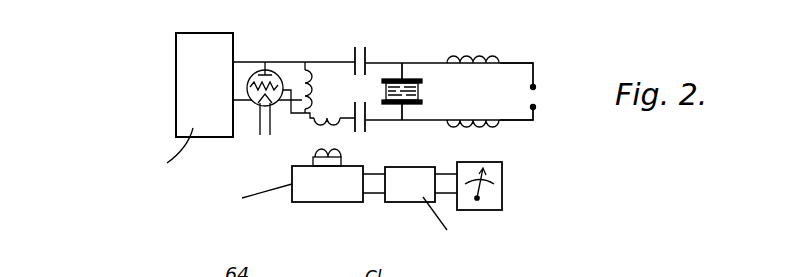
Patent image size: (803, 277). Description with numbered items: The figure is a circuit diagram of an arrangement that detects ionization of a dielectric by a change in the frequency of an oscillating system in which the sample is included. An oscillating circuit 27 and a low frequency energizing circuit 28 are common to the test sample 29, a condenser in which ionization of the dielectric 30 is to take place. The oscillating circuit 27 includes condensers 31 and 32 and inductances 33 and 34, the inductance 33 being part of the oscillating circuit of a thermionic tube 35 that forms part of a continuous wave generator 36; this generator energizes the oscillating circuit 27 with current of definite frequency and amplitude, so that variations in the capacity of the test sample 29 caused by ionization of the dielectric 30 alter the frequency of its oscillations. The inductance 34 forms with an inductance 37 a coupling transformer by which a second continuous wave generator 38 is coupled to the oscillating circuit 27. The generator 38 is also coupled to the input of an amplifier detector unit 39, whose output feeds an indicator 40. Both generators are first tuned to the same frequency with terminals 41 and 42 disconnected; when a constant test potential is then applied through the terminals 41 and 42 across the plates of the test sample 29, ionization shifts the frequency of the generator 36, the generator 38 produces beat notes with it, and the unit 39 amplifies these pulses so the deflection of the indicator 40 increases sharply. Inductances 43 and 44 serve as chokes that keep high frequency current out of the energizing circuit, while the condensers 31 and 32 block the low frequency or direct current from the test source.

The oscillating circuit 27 is at (340, 55).
The low frequency energizing circuit 28 is at (516, 77).
The test sample 29 is at (429, 91).
The dielectric 30 is at (400, 86).
The condenser 31 is at (366, 56).
The condenser 32 is at (365, 130).
The inductance 33 is at (305, 112).
The inductance 34 is at (325, 116).
The thermionic tube 35 is at (269, 62).
The continuous wave generator 36 is at (203, 45).
The inductance 37 is at (313, 152).
The continuous wave generator 38 is at (336, 203).
The amplifier detector unit 39 is at (417, 203).
The indicator 40 is at (502, 192).
The terminal 41 is at (537, 87).
The terminal 42 is at (537, 107).
The inductance 43 is at (466, 60).
The inductance 44 is at (467, 117).